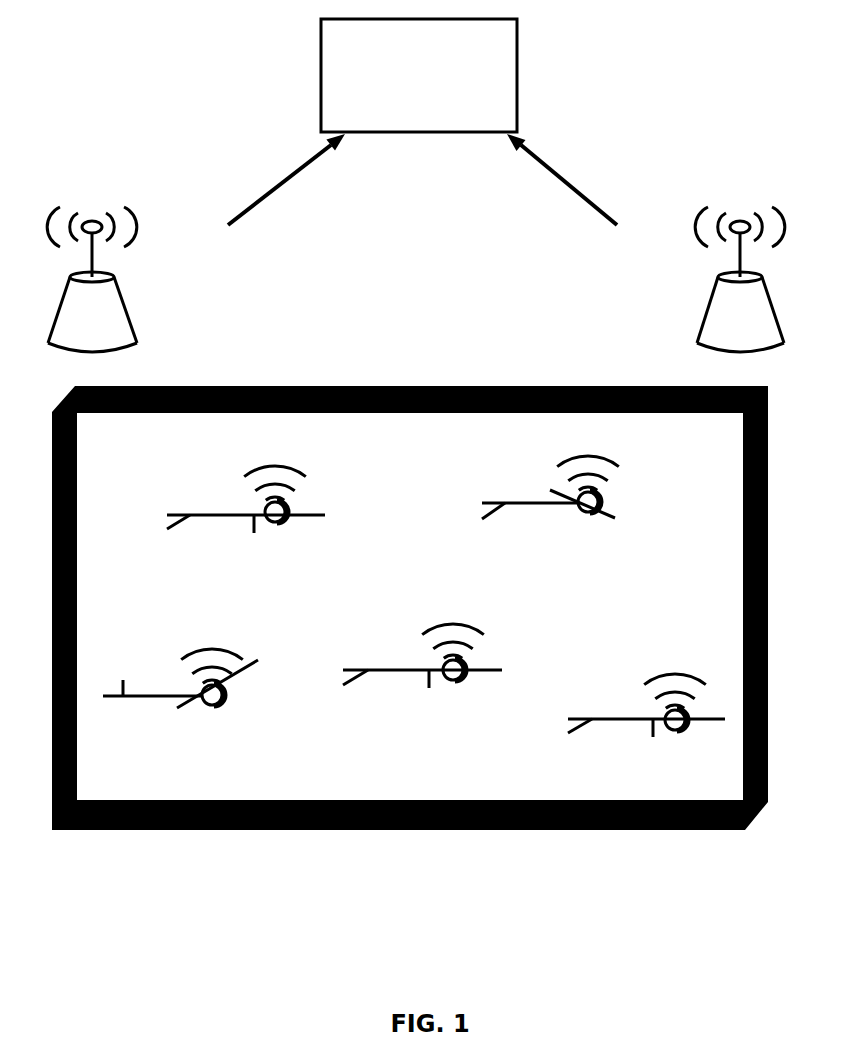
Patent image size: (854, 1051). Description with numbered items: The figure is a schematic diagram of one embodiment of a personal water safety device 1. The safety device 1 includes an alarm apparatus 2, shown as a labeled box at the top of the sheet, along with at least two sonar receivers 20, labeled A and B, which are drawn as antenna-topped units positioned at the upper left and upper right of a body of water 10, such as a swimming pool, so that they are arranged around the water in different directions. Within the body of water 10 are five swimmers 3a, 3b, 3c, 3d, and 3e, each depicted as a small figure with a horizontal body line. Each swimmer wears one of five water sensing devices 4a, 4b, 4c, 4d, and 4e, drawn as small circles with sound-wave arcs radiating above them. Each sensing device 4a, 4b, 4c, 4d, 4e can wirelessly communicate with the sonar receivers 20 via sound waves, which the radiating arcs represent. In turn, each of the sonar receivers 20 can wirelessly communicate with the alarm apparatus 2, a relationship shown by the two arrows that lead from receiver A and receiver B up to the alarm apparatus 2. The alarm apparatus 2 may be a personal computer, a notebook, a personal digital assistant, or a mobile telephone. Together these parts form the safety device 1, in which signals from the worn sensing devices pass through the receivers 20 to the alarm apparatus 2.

The personal water safety device 1 is at (215, 75).
The alarm apparatus 2 is at (517, 72).
The body of water 10 is at (347, 386).
The sonar receivers 20 is at (122, 298).
The swimmer 3a is at (210, 497).
The swimmer 3b is at (515, 486).
The swimmer 3c is at (143, 678).
The swimmer 3d is at (383, 652).
The swimmer 3e is at (595, 701).
The water sensing device 4a is at (282, 540).
The water sensing device 4b is at (593, 533).
The water sensing device 4c is at (217, 724).
The water sensing device 4d is at (455, 699).
The water sensing device 4e is at (682, 748).